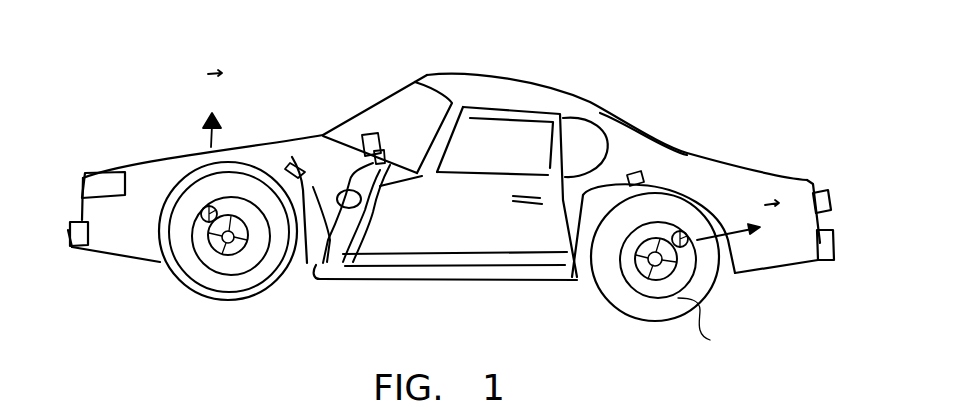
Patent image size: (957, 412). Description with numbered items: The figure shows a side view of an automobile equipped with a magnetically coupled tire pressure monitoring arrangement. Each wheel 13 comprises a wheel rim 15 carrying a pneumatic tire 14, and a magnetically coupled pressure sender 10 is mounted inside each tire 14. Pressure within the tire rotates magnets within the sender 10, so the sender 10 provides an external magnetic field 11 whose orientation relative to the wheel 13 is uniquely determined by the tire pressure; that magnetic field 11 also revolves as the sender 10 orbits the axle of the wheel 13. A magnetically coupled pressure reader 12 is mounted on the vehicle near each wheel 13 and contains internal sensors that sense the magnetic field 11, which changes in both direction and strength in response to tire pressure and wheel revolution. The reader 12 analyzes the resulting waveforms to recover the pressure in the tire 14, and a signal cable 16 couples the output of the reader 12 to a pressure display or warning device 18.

The magnetically coupled pressure sender 10 is at (205, 206).
The external magnetic field 11 is at (208, 133).
The magnetically coupled pressure reader 12 is at (288, 162).
The wheel 13 is at (207, 297).
The pneumatic tire 14 is at (203, 275).
The wheel rim 15 is at (247, 267).
The signal cable 16 is at (307, 250).
The pressure display device 18 is at (381, 147).